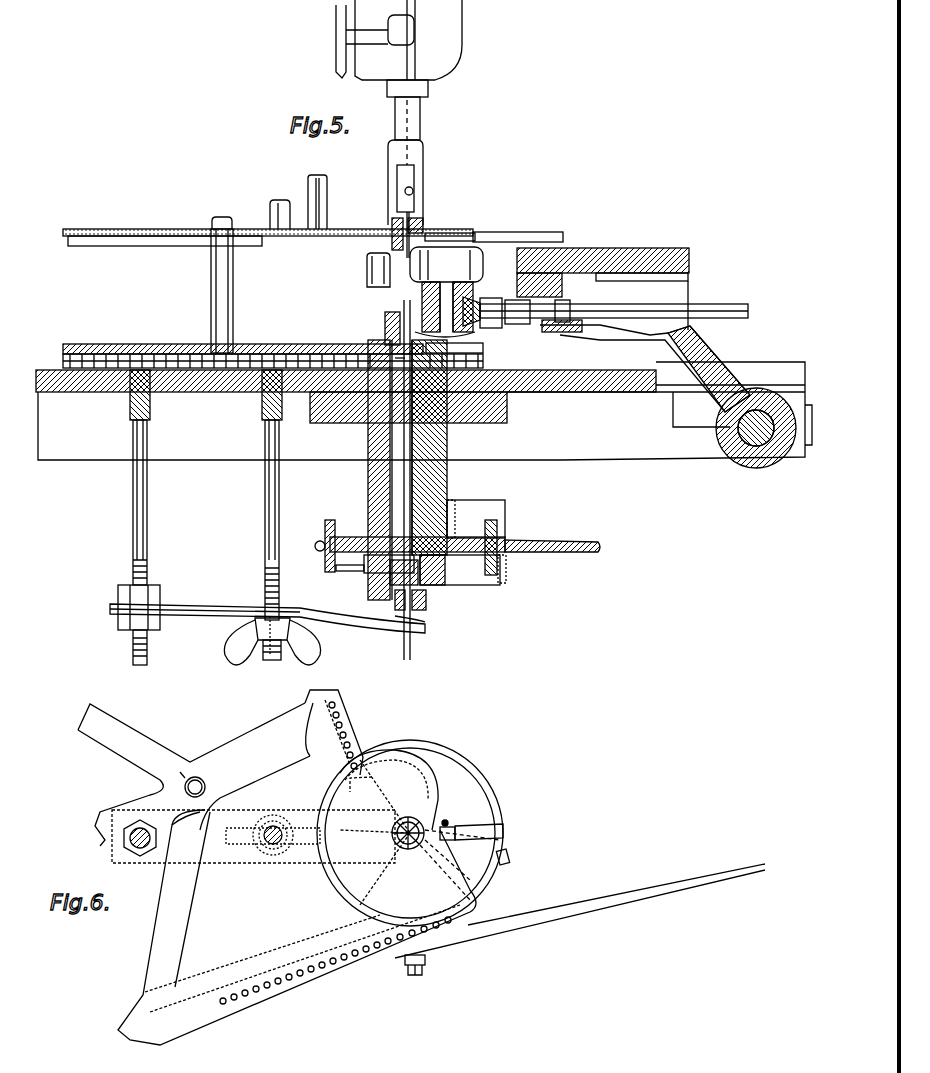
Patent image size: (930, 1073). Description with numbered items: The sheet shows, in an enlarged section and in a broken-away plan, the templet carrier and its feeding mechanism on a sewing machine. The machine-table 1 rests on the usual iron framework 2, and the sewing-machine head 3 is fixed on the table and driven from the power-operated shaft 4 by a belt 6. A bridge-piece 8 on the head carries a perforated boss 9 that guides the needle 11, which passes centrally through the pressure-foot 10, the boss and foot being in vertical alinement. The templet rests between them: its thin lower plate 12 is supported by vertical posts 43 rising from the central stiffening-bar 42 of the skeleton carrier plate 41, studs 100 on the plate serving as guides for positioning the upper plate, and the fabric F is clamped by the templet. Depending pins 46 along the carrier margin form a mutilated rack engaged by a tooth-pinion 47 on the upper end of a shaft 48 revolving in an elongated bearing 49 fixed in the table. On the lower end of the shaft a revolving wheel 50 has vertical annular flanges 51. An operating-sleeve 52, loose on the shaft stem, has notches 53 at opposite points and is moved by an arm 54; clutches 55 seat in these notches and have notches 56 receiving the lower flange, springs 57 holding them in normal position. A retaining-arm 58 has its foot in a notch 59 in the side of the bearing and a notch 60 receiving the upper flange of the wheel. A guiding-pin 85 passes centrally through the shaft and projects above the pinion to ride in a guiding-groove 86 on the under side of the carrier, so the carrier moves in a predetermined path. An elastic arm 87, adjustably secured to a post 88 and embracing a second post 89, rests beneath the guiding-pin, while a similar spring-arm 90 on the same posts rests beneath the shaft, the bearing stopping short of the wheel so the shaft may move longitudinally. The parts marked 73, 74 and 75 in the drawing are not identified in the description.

In FIG. 5, the machine-table 1 is at (46, 402).
In FIG. 5, the iron framework 2 is at (60, 363).
In FIG. 5, the sewing-machine head 3 is at (465, 45).
In FIG. 5, the power-operated shaft 4 is at (400, 248).
In FIG. 5, the belt 6 is at (365, 476).
In FIG. 5, the bridge-piece 8 is at (440, 246).
In FIG. 5, the boss 9 is at (392, 245).
In FIG. 5, the pressure-foot 10 is at (412, 226).
In FIG. 5, the needle 11 is at (410, 236).
In FIG. 5, the lower plate 12 is at (118, 246).
In FIG. 5, the fabric F is at (63, 236).
In FIG. 5, the carrier plate 41 is at (106, 345).
In FIG. 6, the carrier plate 41 is at (262, 1022).
In FIG. 6, the stiffening-bar 42 is at (238, 762).
In FIG. 5, the vertical posts 43 is at (230, 299).
In FIG. 5, the teeth or pins 46 is at (110, 365).
In FIG. 6, the teeth or pins 46 is at (310, 975).
In FIG. 5, the tooth-pinion 47 is at (385, 342).
In FIG. 5, the shaft 48 is at (447, 477).
In FIG. 5, the elongated bearing 49 is at (447, 441).
In FIG. 5, the revolving wheel 50 is at (520, 545).
In FIG. 5, the annular flanges 51 is at (333, 520).
In FIG. 5, the operating-sleeve 52 is at (425, 580).
In FIG. 6, the operating-sleeve 52 is at (448, 820).
In FIG. 5, the notches 53 is at (435, 572).
In FIG. 6, the notches 53 is at (455, 822).
In FIG. 6, the arm 54 is at (425, 960).
In FIG. 5, the clutches 55 is at (506, 580).
In FIG. 6, the clutches 55 is at (320, 812).
In FIG. 5, the notches 56 is at (340, 577).
In FIG. 5, the springs 57 is at (497, 527).
In FIG. 6, the springs 57 is at (335, 855).
In FIG. 5, the retaining-arm 58 is at (470, 512).
In FIG. 6, the retaining-arm 58 is at (503, 830).
In FIG. 5, the notch 59 is at (447, 502).
In FIG. 6, the notch 59 is at (450, 885).
In FIG. 5, the notch 60 is at (490, 516).
In FIG. 5, the work plate 73 is at (104, 238).
In FIG. 5, the bobbin case 74 is at (398, 300).
In FIG. 5, the bracket 75 is at (752, 455).
In FIG. 5, the guiding-pin 85 is at (370, 493).
In FIG. 5, the guiding-groove 86 is at (148, 354).
In FIG. 5, the elastic arm 87 is at (400, 624).
In FIG. 5, the post 88 is at (147, 515).
In FIG. 5, the post 89 is at (260, 505).
In FIG. 5, the spring-arm 90 is at (385, 612).
In FIG. 5, the studs 100 is at (271, 204).